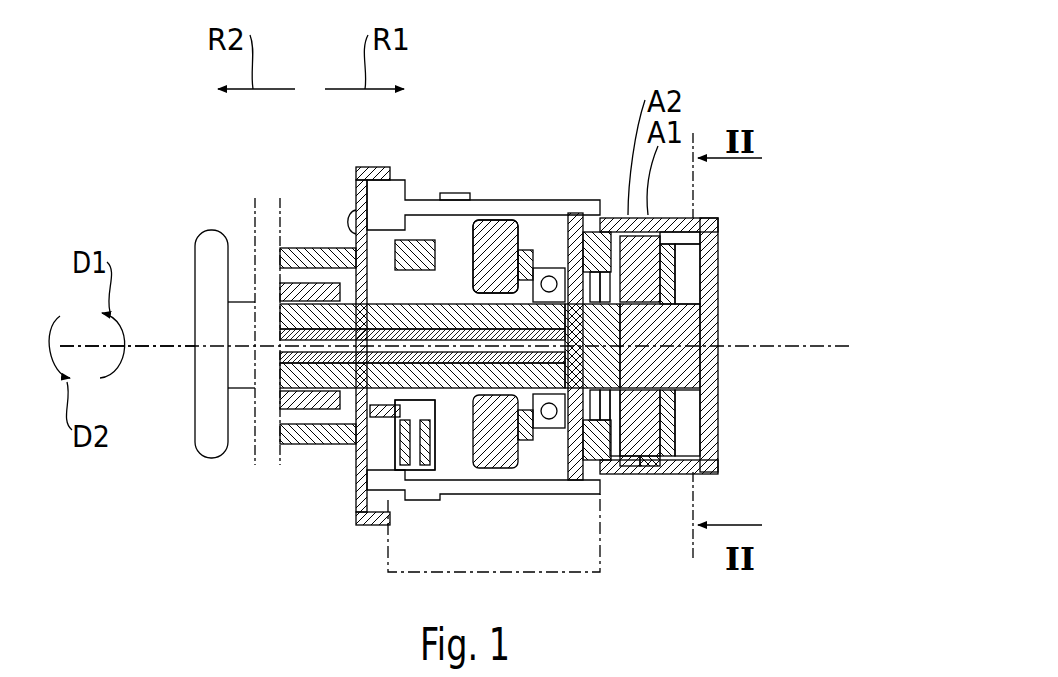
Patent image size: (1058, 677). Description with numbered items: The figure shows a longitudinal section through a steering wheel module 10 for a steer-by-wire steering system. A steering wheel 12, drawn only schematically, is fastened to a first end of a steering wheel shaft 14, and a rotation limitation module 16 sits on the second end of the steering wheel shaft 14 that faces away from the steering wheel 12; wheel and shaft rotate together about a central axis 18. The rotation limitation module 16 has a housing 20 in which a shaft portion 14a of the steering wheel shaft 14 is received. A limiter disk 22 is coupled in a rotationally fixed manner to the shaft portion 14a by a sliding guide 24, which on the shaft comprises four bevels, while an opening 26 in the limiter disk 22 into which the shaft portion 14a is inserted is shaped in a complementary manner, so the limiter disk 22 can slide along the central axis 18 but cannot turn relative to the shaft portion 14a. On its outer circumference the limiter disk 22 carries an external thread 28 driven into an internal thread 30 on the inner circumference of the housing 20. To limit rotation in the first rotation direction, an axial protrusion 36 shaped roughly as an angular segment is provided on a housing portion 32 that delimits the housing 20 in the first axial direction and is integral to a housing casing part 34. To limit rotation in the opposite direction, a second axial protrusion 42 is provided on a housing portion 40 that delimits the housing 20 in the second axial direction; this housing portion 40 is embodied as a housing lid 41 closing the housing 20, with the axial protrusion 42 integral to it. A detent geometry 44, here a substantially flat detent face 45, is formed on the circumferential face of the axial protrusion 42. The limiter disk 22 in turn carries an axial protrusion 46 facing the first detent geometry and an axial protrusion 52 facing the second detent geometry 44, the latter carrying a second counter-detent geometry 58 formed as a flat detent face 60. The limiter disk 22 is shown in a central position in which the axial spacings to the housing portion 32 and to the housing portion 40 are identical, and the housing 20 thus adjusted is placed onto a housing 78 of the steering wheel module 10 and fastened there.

The steering wheel module 10 is at (720, 86).
The steering wheel 12 is at (205, 265).
The steering wheel shaft 14 is at (240, 300).
The shaft portion 14a is at (717, 327).
The rotation limitation module 16 is at (738, 207).
The central axis 18 is at (163, 348).
The housing 20 is at (597, 260).
The limiter disk 22 is at (700, 430).
The sliding guide 24 is at (700, 398).
The opening 26 is at (700, 362).
The external thread 28 is at (650, 480).
The internal thread 30 is at (717, 242).
The housing portion 32 is at (717, 305).
The housing casing part 34 is at (616, 250).
The axial protrusion 36 is at (717, 275).
The housing portion 40 is at (415, 435).
The housing lid 41 is at (552, 494).
The second axial protrusion 42 is at (577, 300).
The detent geometry 44 is at (600, 300).
The detent face 45 is at (495, 256).
The axial protrusion 46 is at (630, 480).
The axial protrusion 52 is at (591, 494).
The second counter-detent geometry 58 is at (605, 290).
The detent face 60 is at (605, 346).
The housing 78 is at (388, 555).